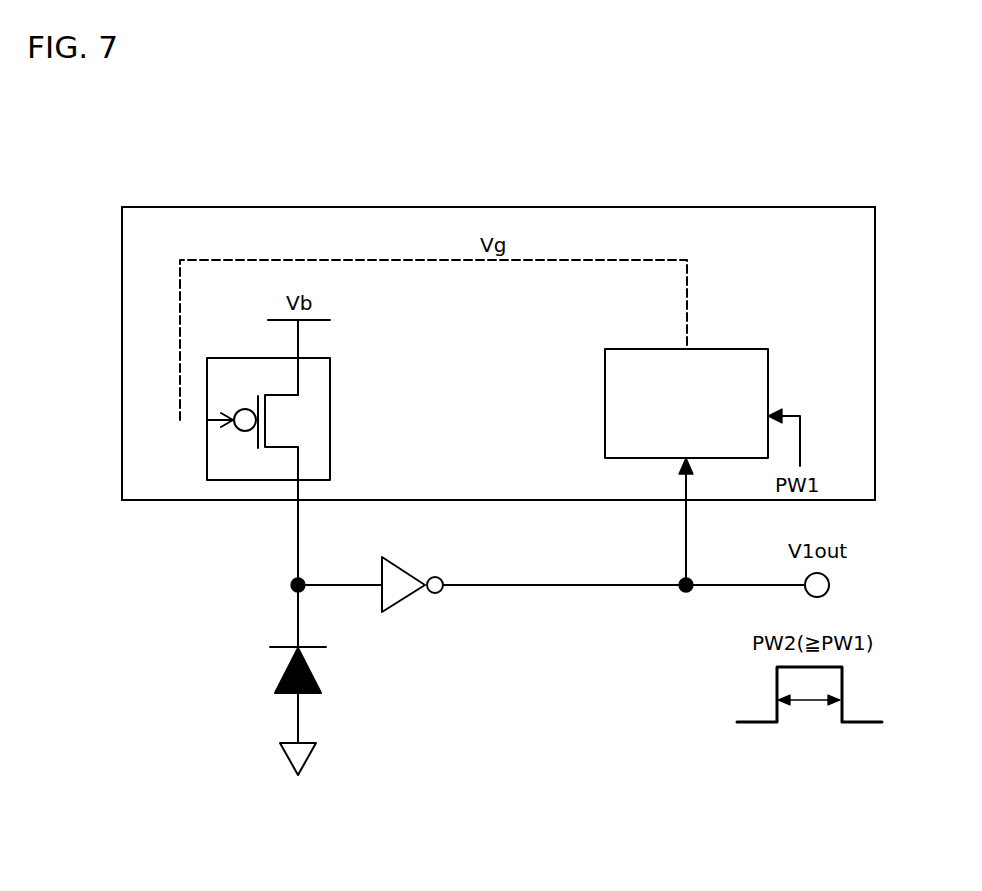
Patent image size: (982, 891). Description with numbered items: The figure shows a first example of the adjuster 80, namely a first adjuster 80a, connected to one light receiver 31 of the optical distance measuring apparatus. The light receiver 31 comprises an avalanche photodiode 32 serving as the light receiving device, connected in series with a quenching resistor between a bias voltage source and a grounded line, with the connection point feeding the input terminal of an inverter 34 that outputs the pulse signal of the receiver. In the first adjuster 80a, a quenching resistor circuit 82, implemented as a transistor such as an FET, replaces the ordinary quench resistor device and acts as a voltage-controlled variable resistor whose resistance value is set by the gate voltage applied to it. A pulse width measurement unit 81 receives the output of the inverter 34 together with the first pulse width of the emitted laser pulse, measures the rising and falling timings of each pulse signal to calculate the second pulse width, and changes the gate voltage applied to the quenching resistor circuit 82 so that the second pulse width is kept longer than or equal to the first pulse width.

The adjuster 80 is at (686, 207).
The first adjuster 80a is at (498, 353).
The pulse width measurement unit 81 is at (717, 349).
The quenching resistor circuit 82 is at (207, 468).
The light receiver 31 is at (208, 562).
The avalanche photodiode 32 is at (278, 687).
The inverter 34 is at (398, 563).